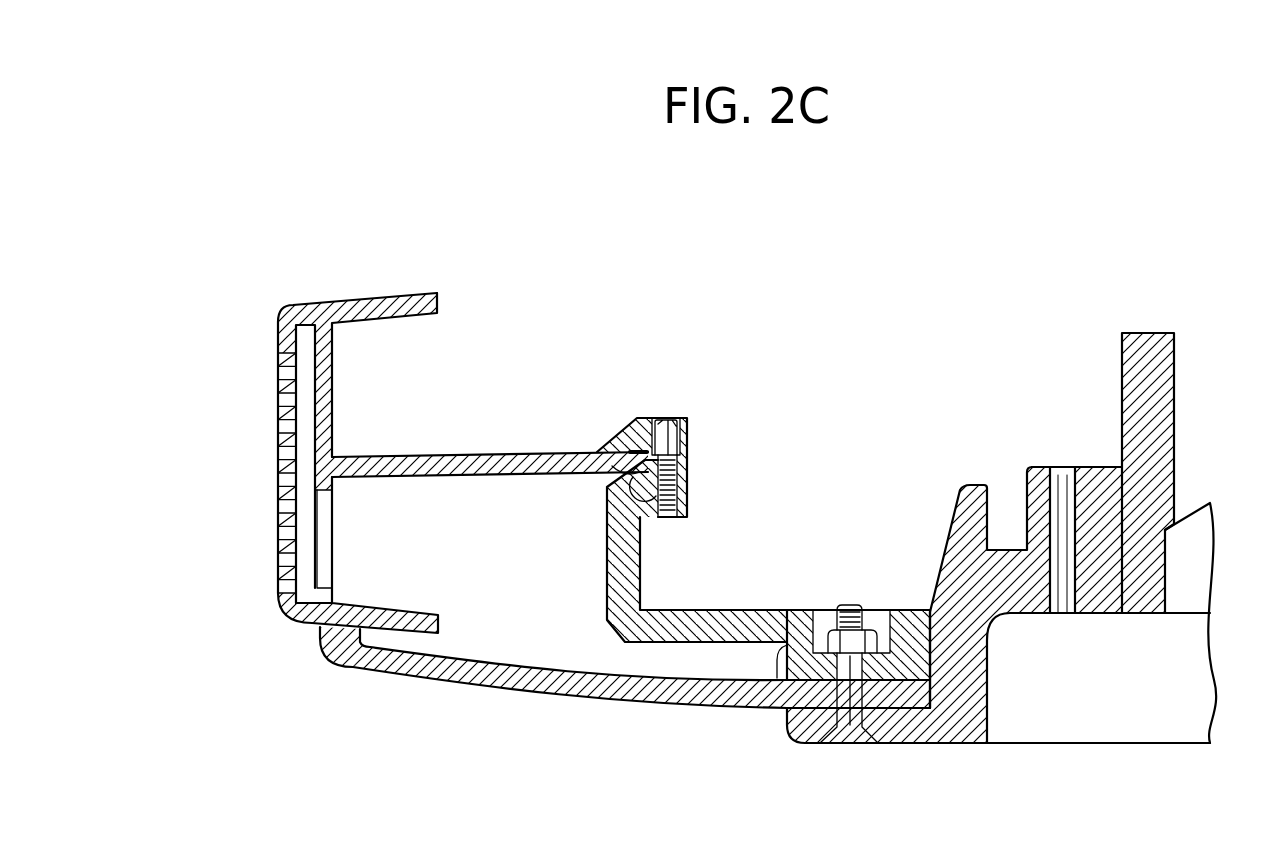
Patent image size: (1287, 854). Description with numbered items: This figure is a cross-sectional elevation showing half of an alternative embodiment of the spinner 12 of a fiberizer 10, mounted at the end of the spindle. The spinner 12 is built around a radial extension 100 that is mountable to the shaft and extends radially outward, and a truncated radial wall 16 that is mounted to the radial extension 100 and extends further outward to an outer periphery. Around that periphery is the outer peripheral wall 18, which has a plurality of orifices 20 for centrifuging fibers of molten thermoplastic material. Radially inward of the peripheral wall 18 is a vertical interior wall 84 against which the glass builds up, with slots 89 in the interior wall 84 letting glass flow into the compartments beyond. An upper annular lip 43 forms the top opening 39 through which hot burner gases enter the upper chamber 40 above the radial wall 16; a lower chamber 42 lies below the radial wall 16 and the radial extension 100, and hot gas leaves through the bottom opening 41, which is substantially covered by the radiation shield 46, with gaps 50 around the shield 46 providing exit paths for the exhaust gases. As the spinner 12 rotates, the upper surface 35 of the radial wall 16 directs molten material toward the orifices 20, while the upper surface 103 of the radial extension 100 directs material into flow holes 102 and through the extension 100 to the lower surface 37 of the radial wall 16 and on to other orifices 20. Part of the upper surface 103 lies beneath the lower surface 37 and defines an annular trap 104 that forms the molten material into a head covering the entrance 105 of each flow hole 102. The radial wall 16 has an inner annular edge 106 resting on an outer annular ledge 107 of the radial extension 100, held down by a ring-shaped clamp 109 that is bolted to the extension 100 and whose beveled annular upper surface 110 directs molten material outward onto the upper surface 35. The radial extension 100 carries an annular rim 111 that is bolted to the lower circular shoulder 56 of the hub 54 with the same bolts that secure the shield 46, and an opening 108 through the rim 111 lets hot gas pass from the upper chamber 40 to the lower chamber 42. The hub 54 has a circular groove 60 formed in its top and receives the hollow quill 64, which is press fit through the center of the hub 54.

The fiberizer 10 is at (1001, 474).
The spinner 12 is at (555, 438).
The radial wall 16 is at (490, 457).
The outer peripheral wall 18 is at (300, 302).
The orifices 20 is at (278, 441).
The upper surface 35 is at (405, 455).
The lower surface 37 is at (413, 482).
The top opening 39 is at (730, 505).
The upper chamber 40 is at (688, 360).
The bottom opening 41 is at (553, 652).
The lower chamber 42 is at (499, 588).
The upper annular lip 43 is at (405, 292).
The radiation shield 46 is at (487, 690).
The gaps 50 is at (323, 632).
The hub 54 is at (1097, 478).
The lower circular shoulder 56 is at (912, 722).
The circular groove 60 is at (1007, 548).
The hollow quill 64 is at (1147, 343).
The vertical interior wall 84 is at (328, 380).
The slots 89 is at (322, 548).
The radial extension 100 is at (727, 628).
The flow holes 102 is at (607, 520).
The upper surface 103 is at (790, 610).
The annular trap 104 is at (693, 585).
The entrance 105 is at (655, 510).
The inner annular edge 106 is at (622, 463).
The outer annular ledge 107 is at (689, 482).
The opening 108 is at (772, 652).
The clamp 109 is at (689, 430).
The annular upper surface 110 is at (616, 418).
The annular rim 111 is at (912, 615).